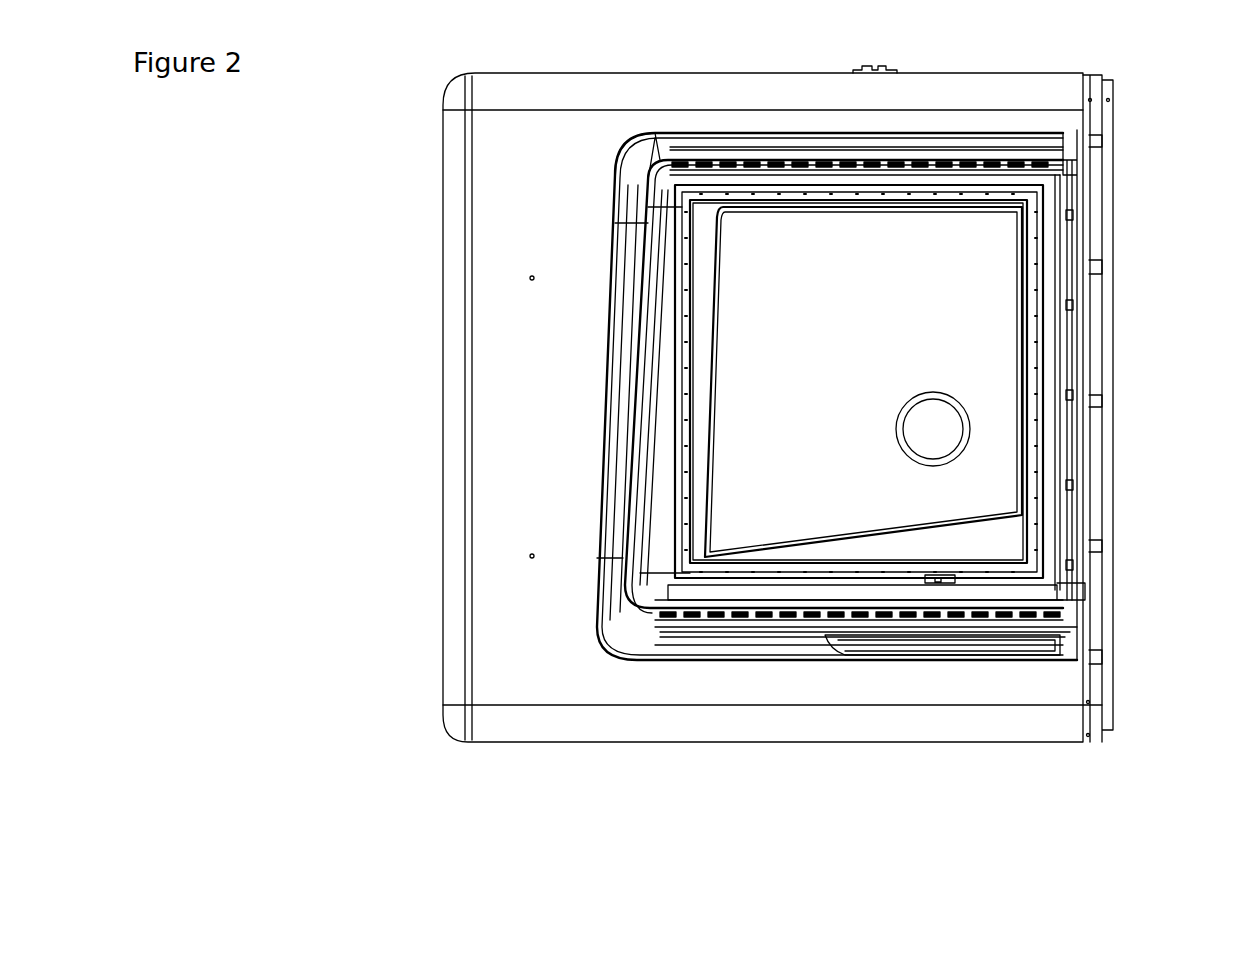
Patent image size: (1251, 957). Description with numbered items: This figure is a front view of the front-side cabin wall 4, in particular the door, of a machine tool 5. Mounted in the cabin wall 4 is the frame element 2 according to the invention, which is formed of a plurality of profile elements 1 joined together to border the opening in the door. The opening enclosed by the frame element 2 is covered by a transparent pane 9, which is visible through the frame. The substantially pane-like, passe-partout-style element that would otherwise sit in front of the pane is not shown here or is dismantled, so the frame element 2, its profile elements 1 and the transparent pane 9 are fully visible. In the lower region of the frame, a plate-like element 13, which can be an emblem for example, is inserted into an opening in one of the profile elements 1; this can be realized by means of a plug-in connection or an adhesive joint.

The profile element 1 is at (935, 140).
The frame element 2 is at (655, 152).
The cabin wall 4 is at (537, 241).
The machine tool 5 is at (428, 140).
The transparent pane 9 is at (975, 330).
The plate-like element 13 is at (953, 643).